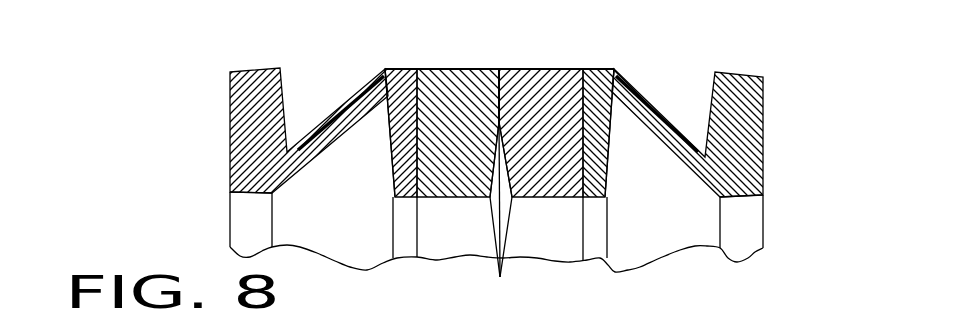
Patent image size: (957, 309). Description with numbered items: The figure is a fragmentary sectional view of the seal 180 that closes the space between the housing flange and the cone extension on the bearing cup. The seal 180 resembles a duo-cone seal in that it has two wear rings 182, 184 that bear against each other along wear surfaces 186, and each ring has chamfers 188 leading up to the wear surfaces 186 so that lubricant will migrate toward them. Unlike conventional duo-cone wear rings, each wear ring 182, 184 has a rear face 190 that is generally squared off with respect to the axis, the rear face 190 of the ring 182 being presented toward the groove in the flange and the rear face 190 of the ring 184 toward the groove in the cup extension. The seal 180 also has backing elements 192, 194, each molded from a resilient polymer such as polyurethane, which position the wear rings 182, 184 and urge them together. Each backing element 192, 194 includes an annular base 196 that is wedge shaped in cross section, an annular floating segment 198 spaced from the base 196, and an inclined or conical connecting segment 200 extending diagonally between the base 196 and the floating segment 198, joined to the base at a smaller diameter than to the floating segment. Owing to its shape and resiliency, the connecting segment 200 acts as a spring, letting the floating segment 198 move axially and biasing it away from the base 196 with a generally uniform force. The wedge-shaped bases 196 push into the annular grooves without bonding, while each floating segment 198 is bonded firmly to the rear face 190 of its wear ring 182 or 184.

The seal 180 is at (790, 64).
The wear ring 182 is at (453, 245).
The wear ring 184 is at (543, 232).
The wear surfaces 186 is at (500, 95).
The chamfers 188 is at (504, 188).
The rear face 190 is at (396, 100).
The backing element 192 is at (293, 220).
The backing element 194 is at (692, 225).
The annular base 196 is at (230, 122).
The annular floating segment 198 is at (390, 151).
The connecting segment 200 is at (350, 98).